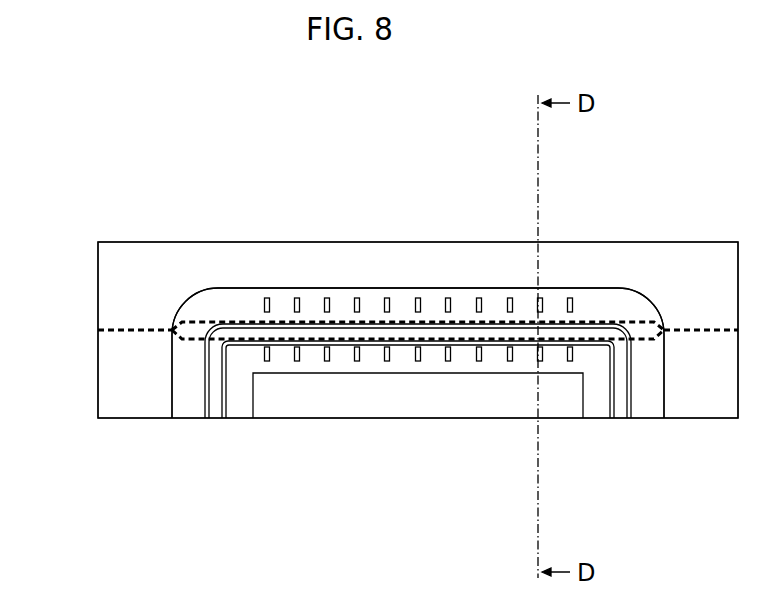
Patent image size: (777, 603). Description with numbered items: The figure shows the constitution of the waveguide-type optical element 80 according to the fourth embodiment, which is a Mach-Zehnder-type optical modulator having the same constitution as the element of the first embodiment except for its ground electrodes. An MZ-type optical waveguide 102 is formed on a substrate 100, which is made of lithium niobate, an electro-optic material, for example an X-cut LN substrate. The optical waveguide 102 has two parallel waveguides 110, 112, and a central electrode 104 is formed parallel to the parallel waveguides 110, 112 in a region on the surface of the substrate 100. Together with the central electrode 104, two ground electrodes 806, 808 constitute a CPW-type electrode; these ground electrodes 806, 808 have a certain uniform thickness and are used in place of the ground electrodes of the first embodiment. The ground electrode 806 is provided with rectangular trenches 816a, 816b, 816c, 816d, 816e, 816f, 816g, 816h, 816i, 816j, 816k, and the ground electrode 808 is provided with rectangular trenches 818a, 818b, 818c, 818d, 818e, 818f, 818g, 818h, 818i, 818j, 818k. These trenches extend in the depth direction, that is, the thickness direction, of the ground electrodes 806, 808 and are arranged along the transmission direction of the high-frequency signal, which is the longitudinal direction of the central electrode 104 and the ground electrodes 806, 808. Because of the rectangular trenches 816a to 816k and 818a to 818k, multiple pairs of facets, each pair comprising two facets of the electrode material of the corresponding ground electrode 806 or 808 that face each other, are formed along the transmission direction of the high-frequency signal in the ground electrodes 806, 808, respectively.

The waveguide-type optical element 80 is at (127, 153).
The substrate 100 is at (123, 257).
The Mach-Zehnder-type optical waveguide 102 is at (120, 330).
The central electrode 104 is at (232, 292).
The parallel waveguide 110 is at (205, 320).
The parallel waveguide 112 is at (200, 343).
The ground electrode 806 is at (606, 291).
The ground electrode 808 is at (628, 420).
The rectangular trench 816a is at (267, 297).
The rectangular trench 816b is at (297, 297).
The rectangular trench 816c is at (327, 297).
The rectangular trench 816d is at (357, 297).
The rectangular trench 816e is at (387, 297).
The rectangular trench 816f is at (418, 297).
The rectangular trench 816g is at (448, 297).
The rectangular trench 816h is at (479, 297).
The rectangular trench 816i is at (510, 297).
The rectangular trench 816j is at (540, 297).
The rectangular trench 816k is at (571, 298).
The rectangular trench 818a is at (267, 362).
The rectangular trench 818b is at (297, 362).
The rectangular trench 818c is at (327, 362).
The rectangular trench 818d is at (357, 362).
The rectangular trench 818e is at (387, 362).
The rectangular trench 818f is at (418, 362).
The rectangular trench 818g is at (448, 362).
The rectangular trench 818h is at (479, 362).
The rectangular trench 818i is at (510, 362).
The rectangular trench 818j is at (540, 362).
The rectangular trench 818k is at (570, 362).